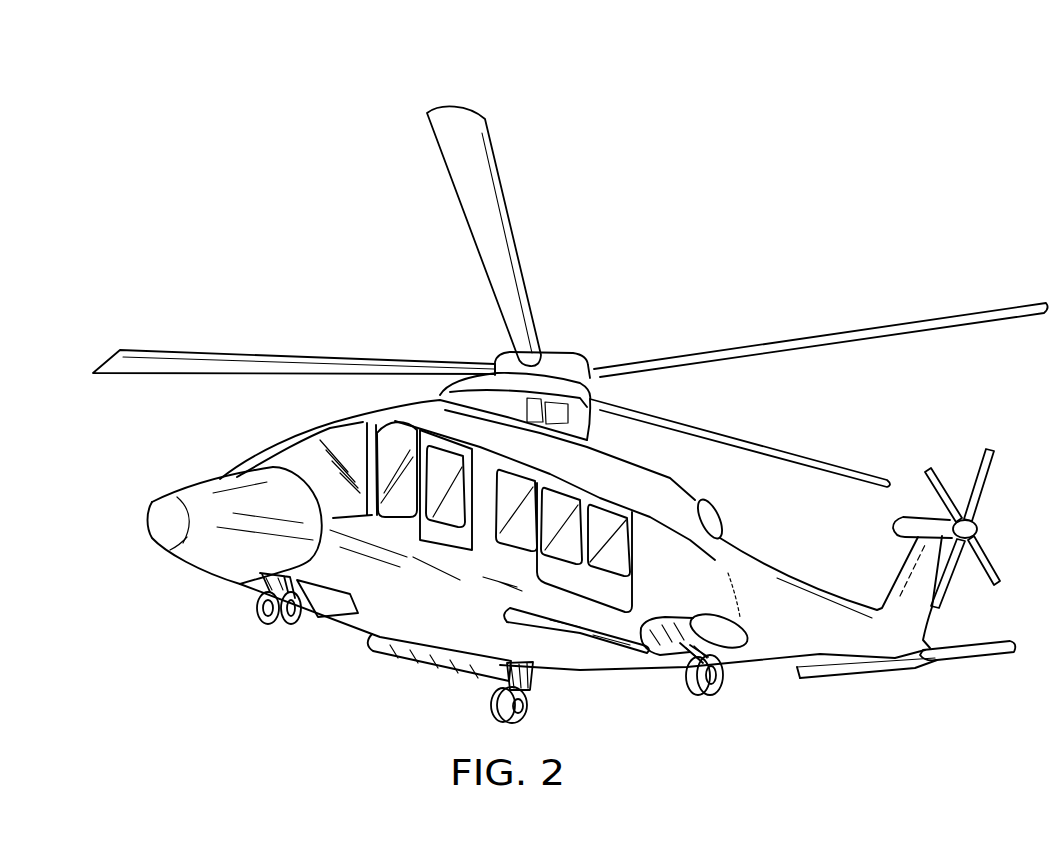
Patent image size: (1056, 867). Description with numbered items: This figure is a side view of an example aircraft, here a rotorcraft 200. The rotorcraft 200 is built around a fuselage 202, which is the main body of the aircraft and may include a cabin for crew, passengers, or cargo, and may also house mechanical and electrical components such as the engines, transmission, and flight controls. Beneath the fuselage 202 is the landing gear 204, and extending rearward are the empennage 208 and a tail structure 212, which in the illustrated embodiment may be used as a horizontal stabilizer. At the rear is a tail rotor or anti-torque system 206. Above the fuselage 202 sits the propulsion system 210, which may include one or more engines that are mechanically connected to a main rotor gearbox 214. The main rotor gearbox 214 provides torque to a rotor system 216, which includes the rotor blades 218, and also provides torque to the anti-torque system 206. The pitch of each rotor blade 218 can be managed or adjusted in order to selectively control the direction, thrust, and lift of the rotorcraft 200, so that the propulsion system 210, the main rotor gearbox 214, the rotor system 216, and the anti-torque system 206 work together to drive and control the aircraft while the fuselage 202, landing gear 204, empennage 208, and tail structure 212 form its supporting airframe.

The rotorcraft 200 is at (236, 93).
The fuselage 202 is at (353, 623).
The landing gear 204 is at (263, 628).
The tail rotor or anti-torque system 206 is at (961, 431).
The empennage 208 is at (777, 667).
The propulsion system 210 is at (432, 304).
The tail structure 212 is at (973, 653).
The main rotor gearbox 214 is at (603, 427).
The rotor system 216 is at (588, 348).
The rotor blades 218 is at (800, 350).